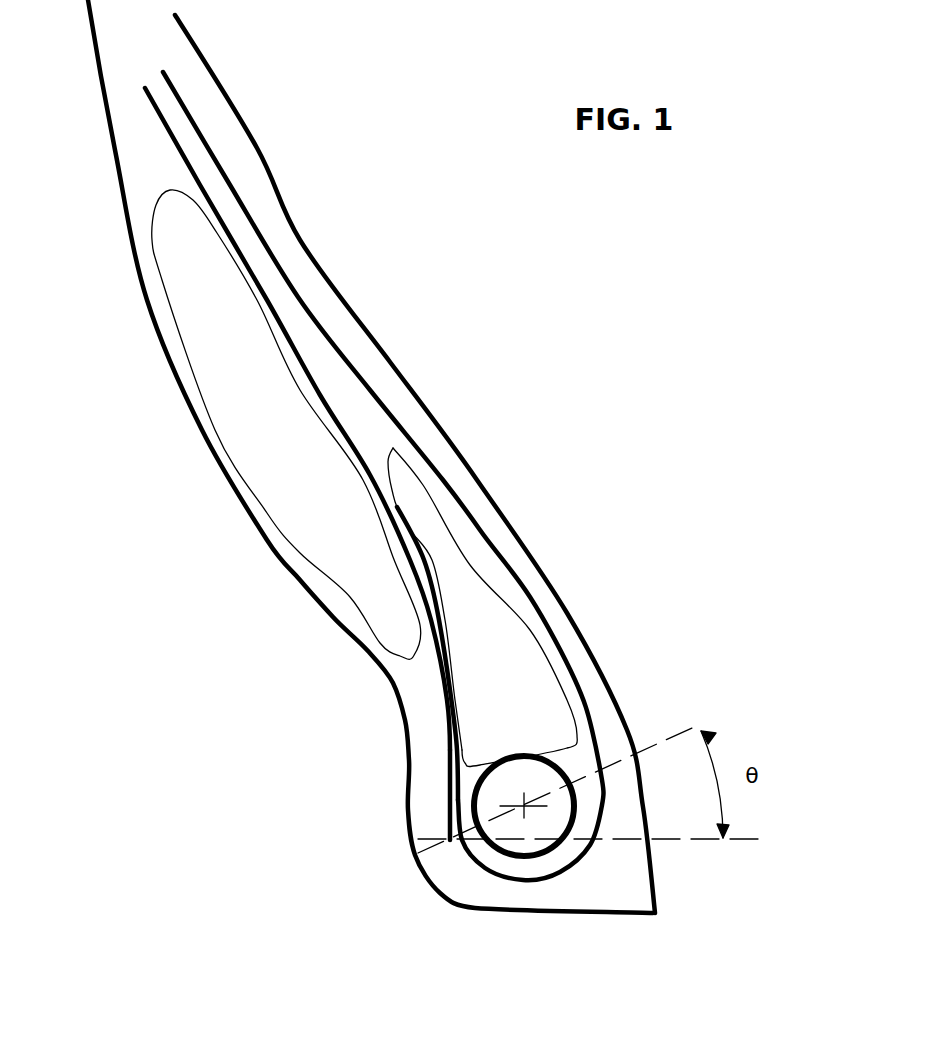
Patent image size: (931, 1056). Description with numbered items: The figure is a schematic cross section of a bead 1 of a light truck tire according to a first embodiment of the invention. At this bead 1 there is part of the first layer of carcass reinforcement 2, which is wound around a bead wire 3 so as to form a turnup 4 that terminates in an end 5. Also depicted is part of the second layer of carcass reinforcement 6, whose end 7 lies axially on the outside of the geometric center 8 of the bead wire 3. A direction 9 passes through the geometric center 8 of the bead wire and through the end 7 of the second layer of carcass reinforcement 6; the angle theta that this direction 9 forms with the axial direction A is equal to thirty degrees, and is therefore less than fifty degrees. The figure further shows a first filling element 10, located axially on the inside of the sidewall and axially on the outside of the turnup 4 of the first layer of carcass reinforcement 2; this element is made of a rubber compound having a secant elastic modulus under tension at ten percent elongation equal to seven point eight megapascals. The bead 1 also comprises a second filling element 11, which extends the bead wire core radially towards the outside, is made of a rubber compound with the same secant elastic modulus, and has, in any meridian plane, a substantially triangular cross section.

The bead 1 is at (687, 917).
The first layer of carcass reinforcement 2 is at (347, 357).
The bead wire 3 is at (537, 827).
The turnup 4 is at (447, 640).
The end 5 is at (398, 507).
The second layer of carcass reinforcement 6 is at (320, 395).
The end 7 is at (447, 835).
The geometric center 8 is at (527, 803).
The direction 9 is at (692, 728).
The first filling element 10 is at (190, 288).
The second filling element 11 is at (528, 682).
The axial direction A is at (687, 842).